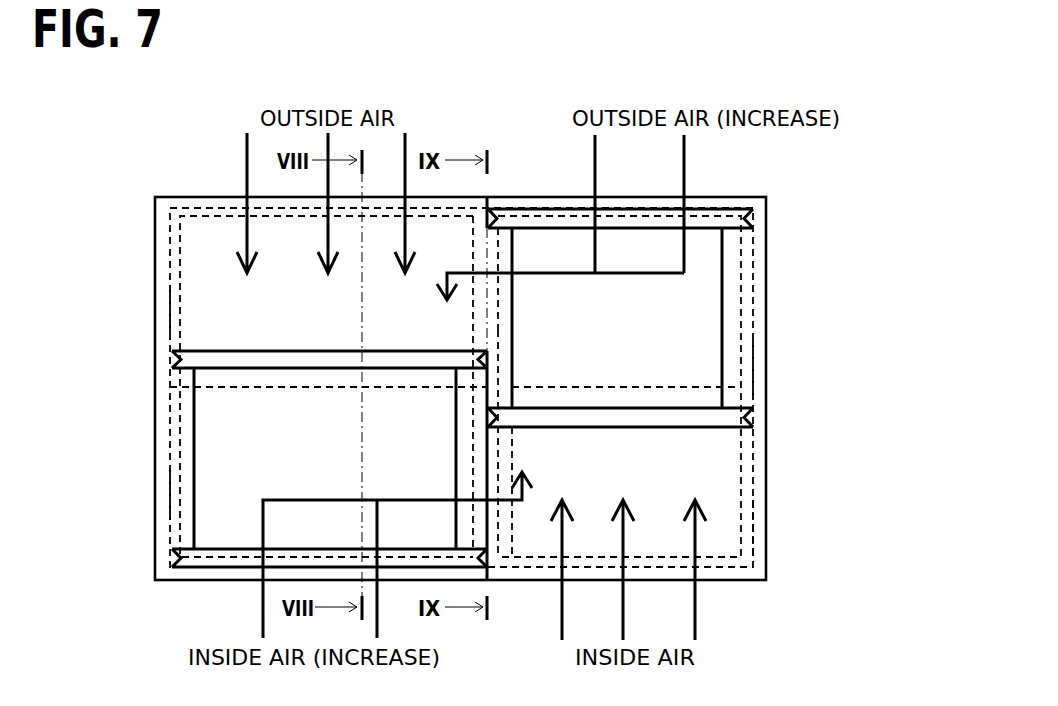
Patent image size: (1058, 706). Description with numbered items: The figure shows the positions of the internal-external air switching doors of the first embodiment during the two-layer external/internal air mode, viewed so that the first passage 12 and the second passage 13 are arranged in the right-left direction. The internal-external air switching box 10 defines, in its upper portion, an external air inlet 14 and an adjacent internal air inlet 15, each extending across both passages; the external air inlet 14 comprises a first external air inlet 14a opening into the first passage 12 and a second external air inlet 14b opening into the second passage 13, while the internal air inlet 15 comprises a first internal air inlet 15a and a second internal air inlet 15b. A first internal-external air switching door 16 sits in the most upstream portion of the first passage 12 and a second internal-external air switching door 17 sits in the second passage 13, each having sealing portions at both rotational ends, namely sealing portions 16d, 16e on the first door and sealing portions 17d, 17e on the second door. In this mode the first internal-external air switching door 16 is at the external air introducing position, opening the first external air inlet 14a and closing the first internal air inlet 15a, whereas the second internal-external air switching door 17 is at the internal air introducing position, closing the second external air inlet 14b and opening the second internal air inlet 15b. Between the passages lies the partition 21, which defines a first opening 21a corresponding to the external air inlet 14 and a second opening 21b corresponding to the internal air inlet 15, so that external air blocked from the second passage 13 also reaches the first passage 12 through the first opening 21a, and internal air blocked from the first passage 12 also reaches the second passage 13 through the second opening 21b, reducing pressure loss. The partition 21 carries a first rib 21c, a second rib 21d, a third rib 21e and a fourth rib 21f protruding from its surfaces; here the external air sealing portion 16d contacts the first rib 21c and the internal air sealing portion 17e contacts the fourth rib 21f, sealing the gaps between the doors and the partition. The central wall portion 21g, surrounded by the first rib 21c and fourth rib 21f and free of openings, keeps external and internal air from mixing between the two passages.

The internal-external air switching box 10 is at (157, 197).
The first passage 12 is at (170, 276).
The second passage 13 is at (741, 269).
The external air inlet 14 is at (754, 305).
The first external air inlet 14a is at (170, 315).
The second external air inlet 14b is at (753, 366).
The internal air inlet 15 is at (753, 484).
The first internal air inlet 15a is at (170, 497).
The second internal air inlet 15b is at (753, 529).
The first internal-external air switching door 16 is at (194, 447).
The external air sealing portion 16d is at (172, 360).
The internal air sealing portion 16e is at (172, 558).
The second internal-external air switching door 17 is at (722, 331).
The external air sealing portion 17d is at (753, 219).
The internal air sealing portion 17e is at (753, 417).
The partition 21 is at (500, 304).
The first opening 21a is at (512, 263).
The second opening 21b is at (498, 530).
The first rib 21c is at (512, 338).
The second rib 21d is at (487, 582).
The third rib 21e is at (490, 262).
The fourth rib 21f is at (499, 404).
The central wall portion 21g is at (487, 388).